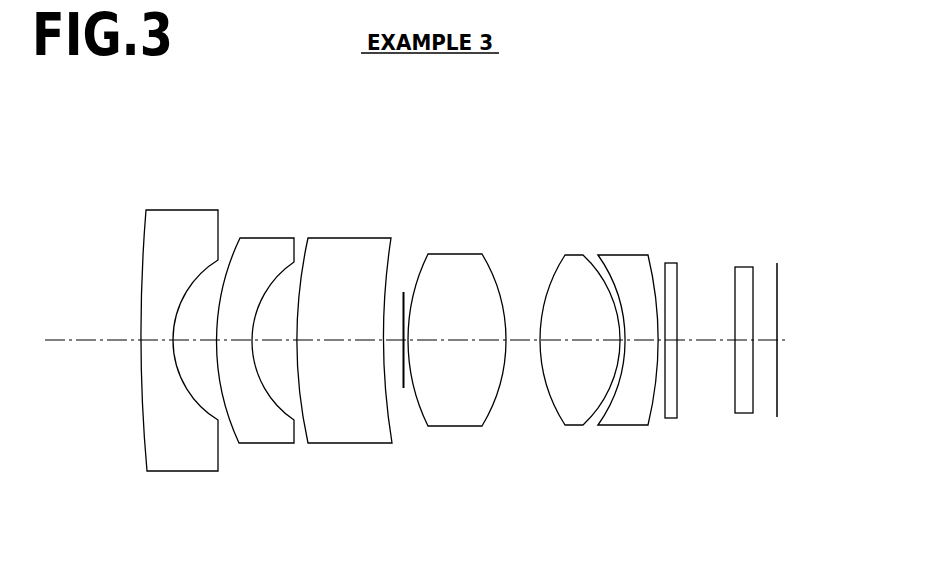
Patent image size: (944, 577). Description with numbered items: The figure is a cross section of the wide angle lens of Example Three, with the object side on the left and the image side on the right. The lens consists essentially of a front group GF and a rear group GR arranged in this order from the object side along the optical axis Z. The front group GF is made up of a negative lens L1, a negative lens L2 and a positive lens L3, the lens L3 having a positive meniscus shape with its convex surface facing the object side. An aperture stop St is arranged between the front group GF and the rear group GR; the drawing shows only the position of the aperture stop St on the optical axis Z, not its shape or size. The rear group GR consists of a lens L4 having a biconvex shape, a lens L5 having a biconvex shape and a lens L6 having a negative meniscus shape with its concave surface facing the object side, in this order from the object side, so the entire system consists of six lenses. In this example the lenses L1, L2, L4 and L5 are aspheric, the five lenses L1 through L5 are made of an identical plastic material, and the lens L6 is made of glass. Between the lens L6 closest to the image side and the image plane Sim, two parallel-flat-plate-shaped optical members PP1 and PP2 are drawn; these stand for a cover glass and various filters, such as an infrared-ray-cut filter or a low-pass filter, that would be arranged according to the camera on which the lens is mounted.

The optical axis Z is at (62, 338).
The front group GF is at (369, 112).
The rear group GR is at (645, 143).
The negative lens L1 is at (182, 218).
The negative lens L2 is at (263, 245).
The positive lens L3 is at (352, 245).
The lens L4 is at (453, 254).
The lens L5 is at (573, 256).
The lens L6 is at (627, 255).
The aperture stop St is at (403, 298).
The parallel-flat-plate-shaped optical member PP1 is at (672, 265).
The parallel-flat-plate-shaped optical member PP2 is at (747, 268).
The image plane Sim is at (778, 417).